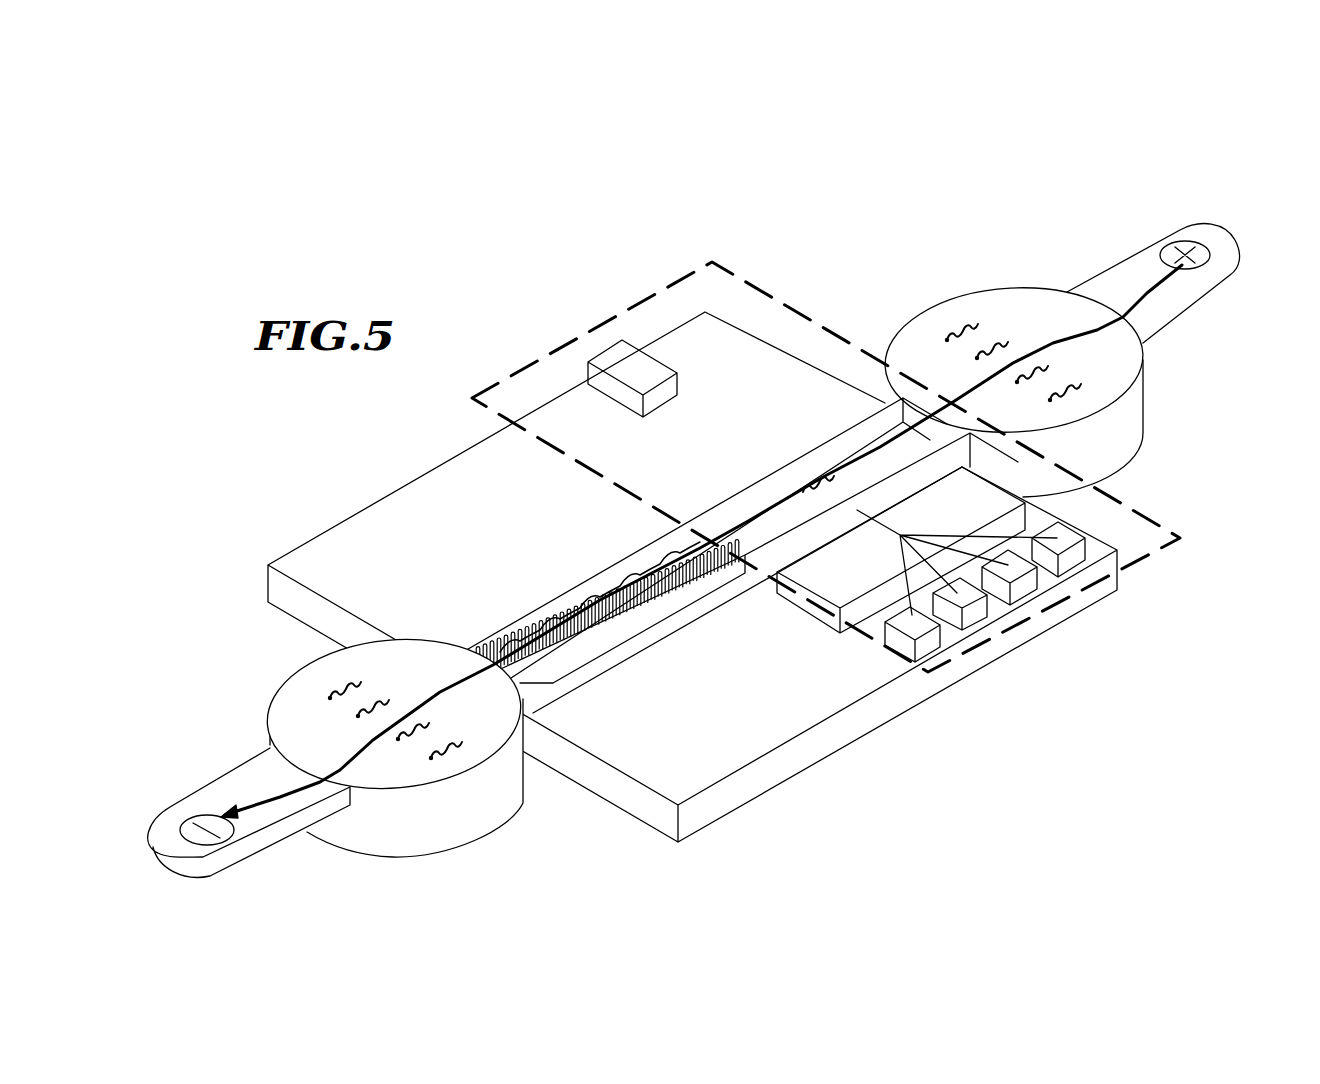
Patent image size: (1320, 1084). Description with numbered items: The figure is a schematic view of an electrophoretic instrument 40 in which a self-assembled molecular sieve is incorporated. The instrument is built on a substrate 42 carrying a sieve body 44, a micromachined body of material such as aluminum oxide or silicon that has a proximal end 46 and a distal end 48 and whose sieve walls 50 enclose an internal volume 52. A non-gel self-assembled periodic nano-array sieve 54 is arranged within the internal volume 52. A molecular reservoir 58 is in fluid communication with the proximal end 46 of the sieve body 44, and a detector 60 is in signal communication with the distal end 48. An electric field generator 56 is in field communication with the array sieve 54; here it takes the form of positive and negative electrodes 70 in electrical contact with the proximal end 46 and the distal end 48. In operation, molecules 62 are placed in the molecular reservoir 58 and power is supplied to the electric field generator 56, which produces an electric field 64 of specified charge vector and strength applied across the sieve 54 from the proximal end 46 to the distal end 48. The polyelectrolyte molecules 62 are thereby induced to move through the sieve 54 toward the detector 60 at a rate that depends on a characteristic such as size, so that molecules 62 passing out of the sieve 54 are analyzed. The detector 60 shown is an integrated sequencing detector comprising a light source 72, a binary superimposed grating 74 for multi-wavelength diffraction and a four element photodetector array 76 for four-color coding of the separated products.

The electrophoretic instrument 40 is at (1049, 180).
The substrate 42 is at (768, 713).
The sieve body 44 is at (580, 553).
The proximal end 46 is at (457, 640).
The distal end 48 is at (888, 386).
The sieve walls 50 is at (533, 600).
The internal volume 52 is at (753, 500).
The non-gel self-assembled periodic nano-array sieve 54 is at (633, 632).
The electric field generator 56 is at (1142, 254).
The molecular reservoir 58 is at (458, 815).
The detector 60 is at (810, 320).
The molecules 62 is at (337, 685).
The electric field 64 is at (1053, 345).
The positive and negative electrodes 70 is at (1222, 283).
The light source 72 is at (613, 357).
The binary superimposed grating 74 is at (832, 583).
The four element photodetector array 76 is at (1023, 590).